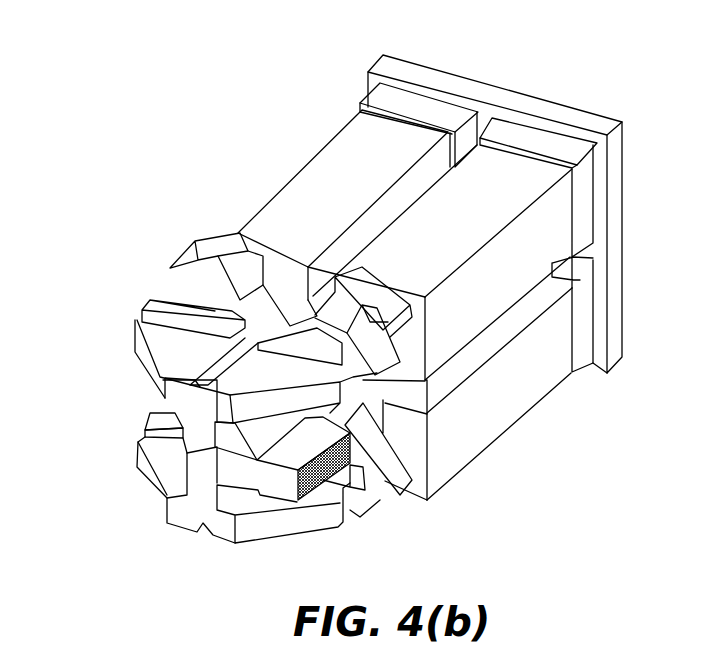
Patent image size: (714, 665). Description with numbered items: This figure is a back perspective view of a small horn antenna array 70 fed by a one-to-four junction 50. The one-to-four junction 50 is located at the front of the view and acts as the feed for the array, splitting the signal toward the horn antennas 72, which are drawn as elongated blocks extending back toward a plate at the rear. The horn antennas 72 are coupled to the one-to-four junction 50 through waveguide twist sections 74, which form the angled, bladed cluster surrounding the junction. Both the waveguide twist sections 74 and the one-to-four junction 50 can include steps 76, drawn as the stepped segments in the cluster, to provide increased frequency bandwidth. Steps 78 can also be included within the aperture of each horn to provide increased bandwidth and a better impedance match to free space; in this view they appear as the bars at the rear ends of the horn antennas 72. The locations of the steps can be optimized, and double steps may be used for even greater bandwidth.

The horn antenna array 70 is at (105, 138).
The steps 78 is at (362, 102).
The horn antennas 72 is at (323, 167).
The one-to-four junction 50 is at (115, 300).
The waveguide twist sections 74 is at (186, 222).
The steps 76 is at (143, 428).